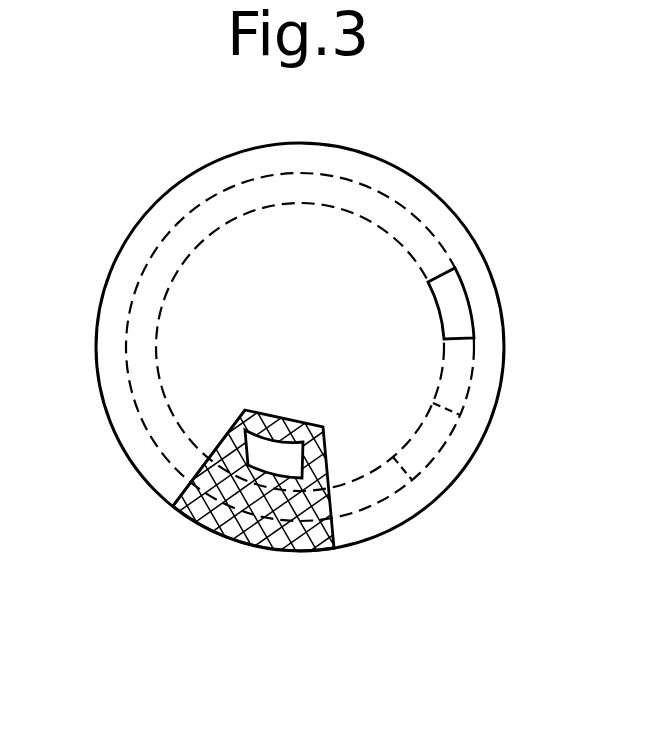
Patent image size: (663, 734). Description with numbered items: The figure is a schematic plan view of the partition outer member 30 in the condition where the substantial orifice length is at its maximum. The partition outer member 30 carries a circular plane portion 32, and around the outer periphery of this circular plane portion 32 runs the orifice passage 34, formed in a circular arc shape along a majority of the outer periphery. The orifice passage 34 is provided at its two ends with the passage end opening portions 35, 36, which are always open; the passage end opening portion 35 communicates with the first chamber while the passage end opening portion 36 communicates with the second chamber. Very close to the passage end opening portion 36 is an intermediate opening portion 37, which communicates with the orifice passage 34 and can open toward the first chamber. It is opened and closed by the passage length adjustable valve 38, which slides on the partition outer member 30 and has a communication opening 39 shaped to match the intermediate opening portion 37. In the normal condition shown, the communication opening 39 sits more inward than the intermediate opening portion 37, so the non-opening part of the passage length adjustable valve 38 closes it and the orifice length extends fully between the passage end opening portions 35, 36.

The partition outer member 30 is at (408, 168).
The circular plane portion 32 is at (203, 315).
The orifice passage 34 is at (190, 257).
The passage end opening portion 35 is at (448, 307).
The passage end opening portion 36 is at (452, 430).
The intermediate opening portion 37 is at (203, 528).
The passage length adjustable valve 38 is at (272, 430).
The communication opening 39 is at (222, 446).